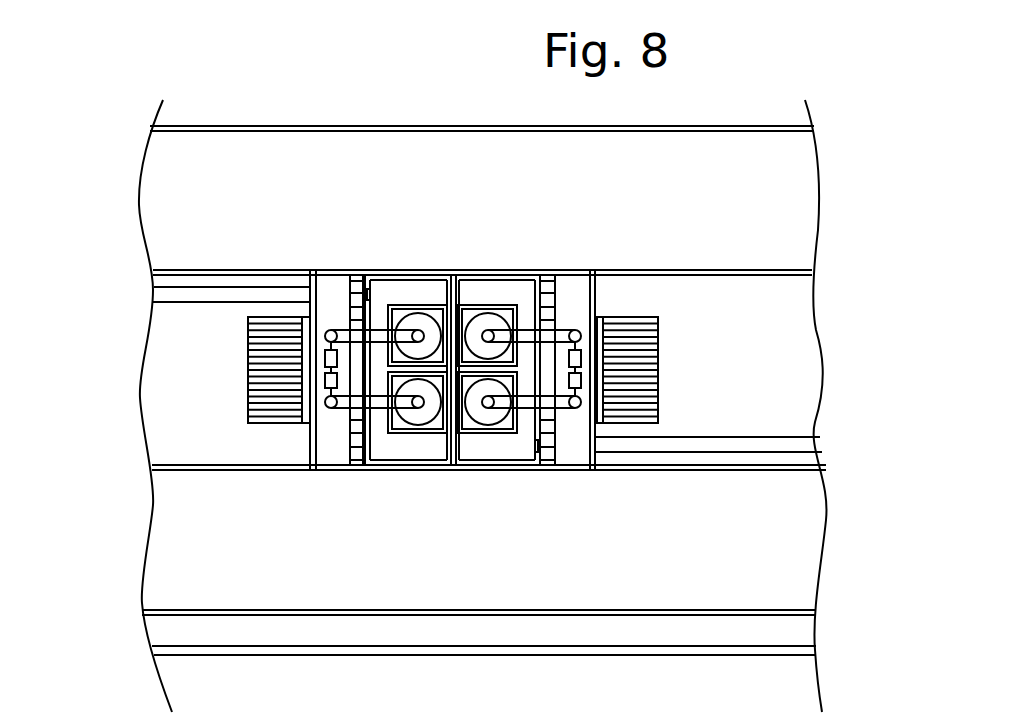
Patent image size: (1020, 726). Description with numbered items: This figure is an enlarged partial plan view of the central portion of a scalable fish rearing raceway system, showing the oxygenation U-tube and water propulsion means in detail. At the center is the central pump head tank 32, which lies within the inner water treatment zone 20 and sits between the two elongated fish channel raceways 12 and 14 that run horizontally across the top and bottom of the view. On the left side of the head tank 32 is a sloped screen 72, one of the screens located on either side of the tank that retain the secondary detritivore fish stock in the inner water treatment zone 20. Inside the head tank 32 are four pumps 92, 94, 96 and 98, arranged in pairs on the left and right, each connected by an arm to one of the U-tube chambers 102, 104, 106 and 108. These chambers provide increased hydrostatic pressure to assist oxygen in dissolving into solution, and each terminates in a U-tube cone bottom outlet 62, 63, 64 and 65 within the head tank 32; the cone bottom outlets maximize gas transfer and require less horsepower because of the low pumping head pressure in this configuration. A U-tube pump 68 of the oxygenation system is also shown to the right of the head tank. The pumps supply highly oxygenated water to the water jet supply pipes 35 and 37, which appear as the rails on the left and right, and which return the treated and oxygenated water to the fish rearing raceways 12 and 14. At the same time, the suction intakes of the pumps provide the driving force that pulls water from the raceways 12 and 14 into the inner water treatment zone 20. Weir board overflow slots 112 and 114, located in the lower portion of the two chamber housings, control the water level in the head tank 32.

The elongated fish channel raceway 12 is at (370, 150).
The elongated fish channel raceway 14 is at (180, 550).
The inner water treatment zone 20 is at (182, 388).
The central pump head tank 32 is at (452, 174).
The water jet supply pipe 35 is at (200, 290).
The water jet supply pipe 37 is at (727, 457).
The U-tube cone bottom outlet 62 is at (438, 462).
The U-tube cone bottom outlet 63 is at (422, 320).
The U-tube cone bottom outlet 64 is at (475, 412).
The U-tube cone bottom outlet 65 is at (474, 328).
The U-tube pump 68 is at (638, 372).
The sloped screen 72 is at (278, 355).
The pump 92 is at (325, 356).
The pump 94 is at (582, 358).
The pump 96 is at (582, 380).
The pump 98 is at (325, 384).
The U-tube chamber 102 is at (395, 312).
The U-tube chamber 104 is at (518, 308).
The U-tube chamber 106 is at (513, 427).
The U-tube chamber 108 is at (397, 418).
The weir board overflow slot 112 is at (422, 418).
The weir board overflow slot 114 is at (500, 462).